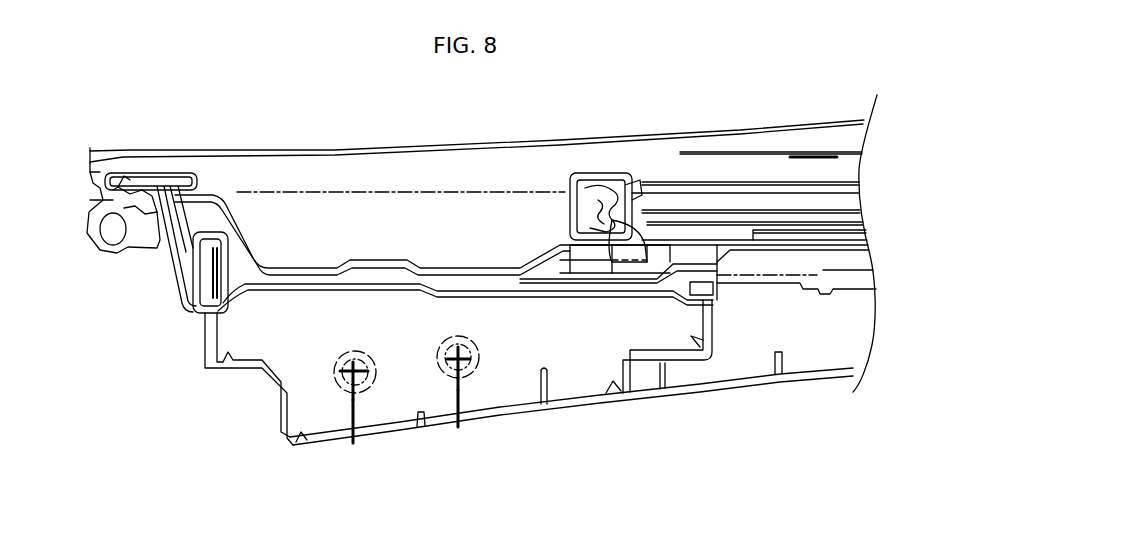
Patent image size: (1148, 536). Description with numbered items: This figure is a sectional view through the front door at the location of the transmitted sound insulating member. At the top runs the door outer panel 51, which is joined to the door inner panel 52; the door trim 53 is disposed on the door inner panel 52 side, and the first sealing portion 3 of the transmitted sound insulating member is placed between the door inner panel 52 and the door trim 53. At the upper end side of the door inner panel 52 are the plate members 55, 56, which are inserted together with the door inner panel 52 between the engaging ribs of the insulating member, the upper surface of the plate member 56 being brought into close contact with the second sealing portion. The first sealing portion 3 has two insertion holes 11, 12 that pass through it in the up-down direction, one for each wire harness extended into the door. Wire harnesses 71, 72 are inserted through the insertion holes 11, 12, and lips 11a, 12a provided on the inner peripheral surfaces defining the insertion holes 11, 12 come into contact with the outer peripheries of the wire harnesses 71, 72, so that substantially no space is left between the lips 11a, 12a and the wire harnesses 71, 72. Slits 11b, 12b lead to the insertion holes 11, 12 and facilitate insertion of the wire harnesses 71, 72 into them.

The door outer panel 51 is at (534, 141).
The plate member 56 is at (420, 260).
The plate member 55 is at (745, 266).
The door inner panel 52 is at (753, 288).
The first sealing portion 3 is at (580, 362).
The door trim 53 is at (731, 382).
The insertion hole 11 is at (307, 447).
The lip 11a is at (337, 357).
The slit 11b is at (363, 420).
The wire harness 72 is at (367, 387).
The insertion hole 12 is at (448, 380).
The lip 12a is at (450, 347).
The slit 12b is at (458, 403).
The wire harness 71 is at (475, 372).